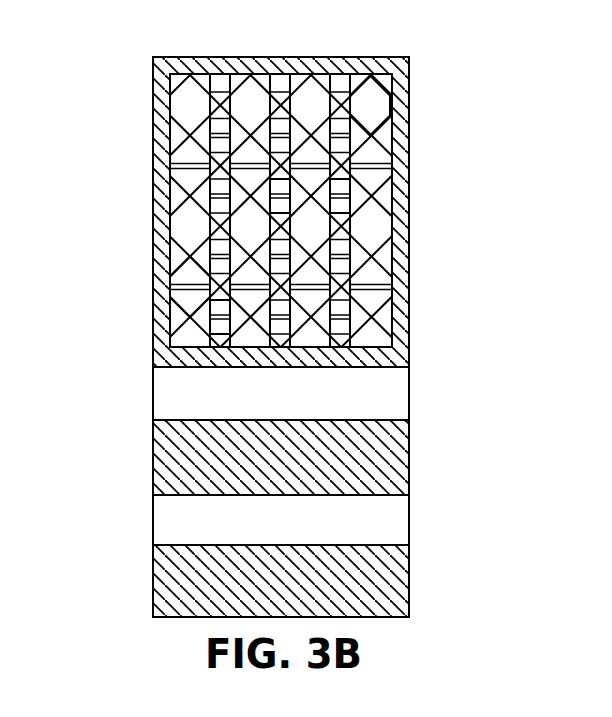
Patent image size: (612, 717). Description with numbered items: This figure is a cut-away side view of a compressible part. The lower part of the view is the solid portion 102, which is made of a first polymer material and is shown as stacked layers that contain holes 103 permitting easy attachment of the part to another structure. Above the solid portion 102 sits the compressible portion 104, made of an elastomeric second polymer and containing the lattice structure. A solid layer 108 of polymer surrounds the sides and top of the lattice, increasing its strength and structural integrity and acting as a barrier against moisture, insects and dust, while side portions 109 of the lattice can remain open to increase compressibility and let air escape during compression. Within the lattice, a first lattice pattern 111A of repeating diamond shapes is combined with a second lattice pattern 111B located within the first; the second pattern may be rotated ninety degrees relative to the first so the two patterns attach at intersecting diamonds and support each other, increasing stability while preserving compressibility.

The solid portion 102 is at (153, 460).
The holes 103 is at (410, 395).
The compressible portion 104 is at (97, 75).
The solid layer 108 is at (268, 57).
The side portions 109 is at (372, 265).
The first lattice pattern 111A is at (370, 125).
The second lattice pattern 111B is at (288, 193).